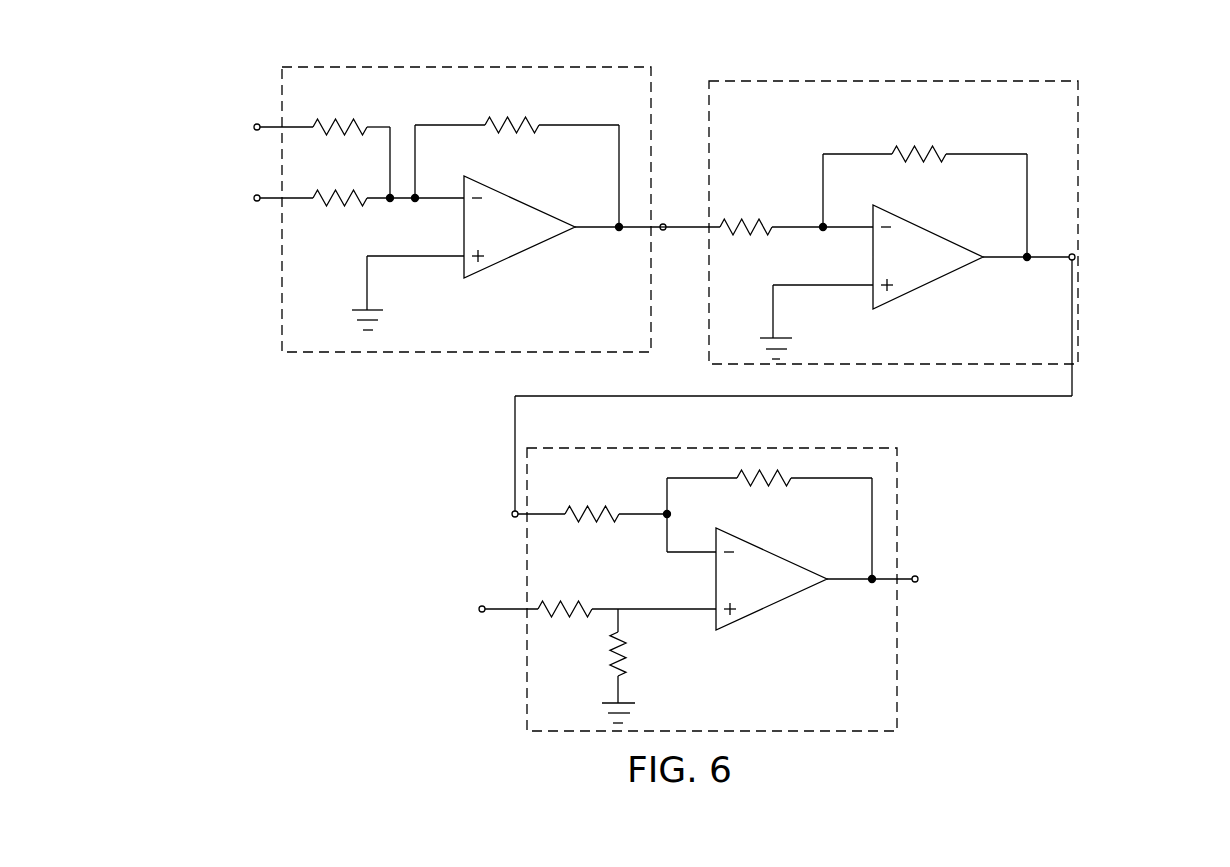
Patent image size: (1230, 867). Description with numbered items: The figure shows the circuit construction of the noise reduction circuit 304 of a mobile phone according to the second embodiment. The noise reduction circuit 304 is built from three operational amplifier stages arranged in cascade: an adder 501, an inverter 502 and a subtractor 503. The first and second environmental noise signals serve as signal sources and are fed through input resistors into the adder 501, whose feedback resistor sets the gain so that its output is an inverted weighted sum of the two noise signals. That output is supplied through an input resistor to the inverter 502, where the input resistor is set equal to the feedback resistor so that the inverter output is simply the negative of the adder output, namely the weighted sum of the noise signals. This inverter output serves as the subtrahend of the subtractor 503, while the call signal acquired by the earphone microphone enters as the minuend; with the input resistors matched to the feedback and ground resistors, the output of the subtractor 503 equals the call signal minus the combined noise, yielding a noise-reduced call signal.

The noise reduction circuit 304 is at (1213, 118).
The adder 501 is at (623, 67).
The inverter 502 is at (1003, 81).
The subtractor 503 is at (880, 447).